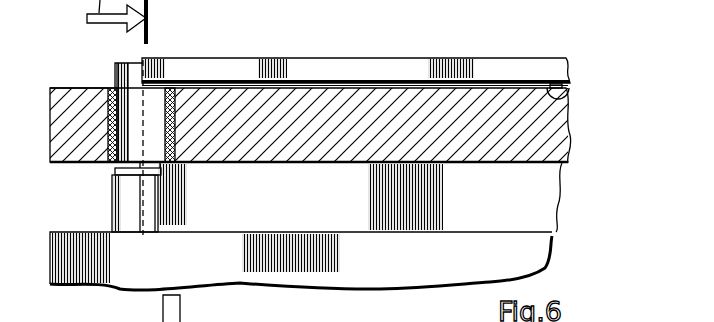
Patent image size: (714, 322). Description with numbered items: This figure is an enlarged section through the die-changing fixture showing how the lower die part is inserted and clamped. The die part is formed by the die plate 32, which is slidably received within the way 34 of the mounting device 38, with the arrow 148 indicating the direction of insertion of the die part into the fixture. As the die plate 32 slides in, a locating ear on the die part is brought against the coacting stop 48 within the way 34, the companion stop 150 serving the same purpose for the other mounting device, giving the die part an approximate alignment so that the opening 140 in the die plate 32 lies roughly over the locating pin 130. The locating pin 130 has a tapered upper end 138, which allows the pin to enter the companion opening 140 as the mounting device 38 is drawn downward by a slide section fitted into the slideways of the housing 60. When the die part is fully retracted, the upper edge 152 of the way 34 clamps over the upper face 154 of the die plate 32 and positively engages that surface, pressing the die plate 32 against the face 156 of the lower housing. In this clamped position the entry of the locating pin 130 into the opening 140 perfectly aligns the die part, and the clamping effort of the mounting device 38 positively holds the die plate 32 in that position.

The die plate 32 is at (569, 127).
The way 34 is at (569, 163).
The mounting device 38 is at (540, 58).
The stop 48 is at (141, 66).
The housing 60 is at (50, 257).
The locating pin 130 is at (122, 193).
The tapered upper end 138 is at (115, 170).
The opening 140 is at (128, 82).
The arrow 148 is at (343, 0).
The member 150 is at (162, 313).
The upper edge 152 is at (572, 95).
The upper face 154 is at (78, 87).
The face 156 is at (537, 233).